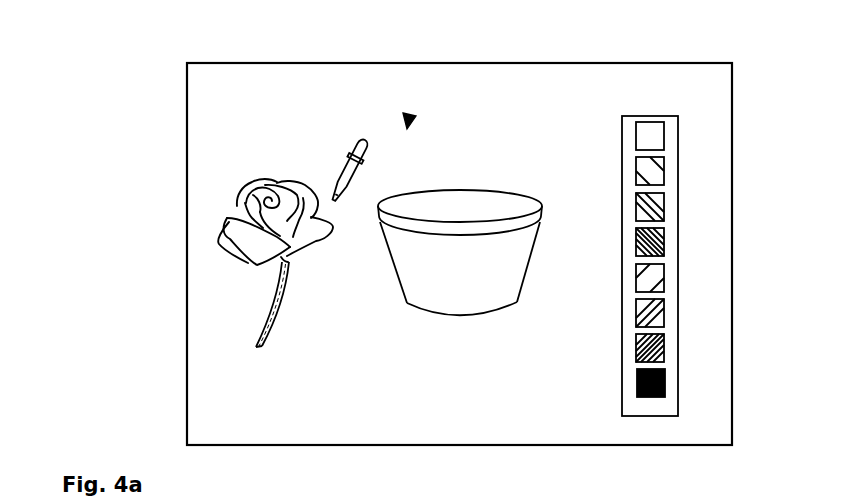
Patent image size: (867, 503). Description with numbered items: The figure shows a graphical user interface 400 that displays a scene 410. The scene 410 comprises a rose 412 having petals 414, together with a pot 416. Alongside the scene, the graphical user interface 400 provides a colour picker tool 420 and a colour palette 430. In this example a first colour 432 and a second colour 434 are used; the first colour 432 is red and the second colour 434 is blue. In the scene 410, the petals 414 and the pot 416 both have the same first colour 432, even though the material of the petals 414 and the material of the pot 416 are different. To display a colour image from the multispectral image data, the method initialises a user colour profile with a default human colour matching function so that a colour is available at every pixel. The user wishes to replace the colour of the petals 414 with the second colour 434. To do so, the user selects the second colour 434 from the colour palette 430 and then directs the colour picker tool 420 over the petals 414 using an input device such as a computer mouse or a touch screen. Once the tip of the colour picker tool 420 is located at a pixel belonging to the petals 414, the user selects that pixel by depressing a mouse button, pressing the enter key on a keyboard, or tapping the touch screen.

The graphical user interface 400 is at (186, 92).
The scene 410 is at (411, 115).
The rose 412 is at (253, 349).
The petals 414 is at (250, 184).
The pot 416 is at (459, 318).
The colour picker tool 420 is at (362, 142).
The colour palette 430 is at (660, 249).
The first colour 432 is at (659, 138).
The second colour 434 is at (665, 384).